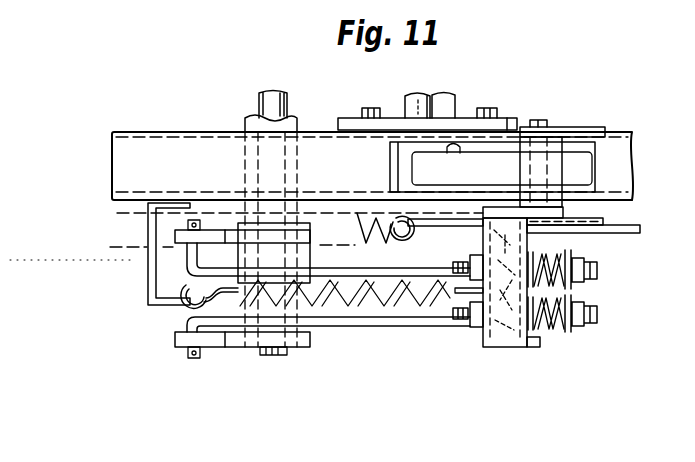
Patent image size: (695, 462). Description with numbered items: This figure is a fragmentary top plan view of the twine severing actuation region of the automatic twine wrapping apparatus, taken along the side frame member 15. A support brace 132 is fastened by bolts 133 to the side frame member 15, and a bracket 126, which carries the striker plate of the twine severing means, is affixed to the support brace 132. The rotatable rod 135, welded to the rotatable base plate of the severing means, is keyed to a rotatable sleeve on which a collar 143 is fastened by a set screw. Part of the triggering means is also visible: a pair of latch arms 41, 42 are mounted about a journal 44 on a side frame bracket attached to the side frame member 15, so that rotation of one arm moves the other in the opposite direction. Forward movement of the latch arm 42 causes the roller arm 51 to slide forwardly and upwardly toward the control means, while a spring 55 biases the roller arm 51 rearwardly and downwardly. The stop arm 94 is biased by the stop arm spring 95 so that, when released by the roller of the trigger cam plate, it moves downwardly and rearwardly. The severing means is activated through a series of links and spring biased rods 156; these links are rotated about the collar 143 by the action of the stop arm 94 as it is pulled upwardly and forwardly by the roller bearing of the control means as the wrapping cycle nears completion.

The side frame member 15 is at (133, 133).
The collar 143 is at (245, 120).
The rotatable rod 135 is at (273, 94).
The bracket 126 is at (437, 93).
The bolts 133 is at (378, 108).
The support brace 132 is at (513, 122).
The journal 44 is at (547, 125).
The latch arm 41 is at (590, 128).
The latch arm 42 is at (563, 213).
The roller arm 51 is at (640, 222).
The stop arm 94 is at (622, 233).
The spring 55 is at (403, 243).
The stop arm spring 95 is at (427, 302).
The series of links and spring biased rods 156 is at (360, 338).